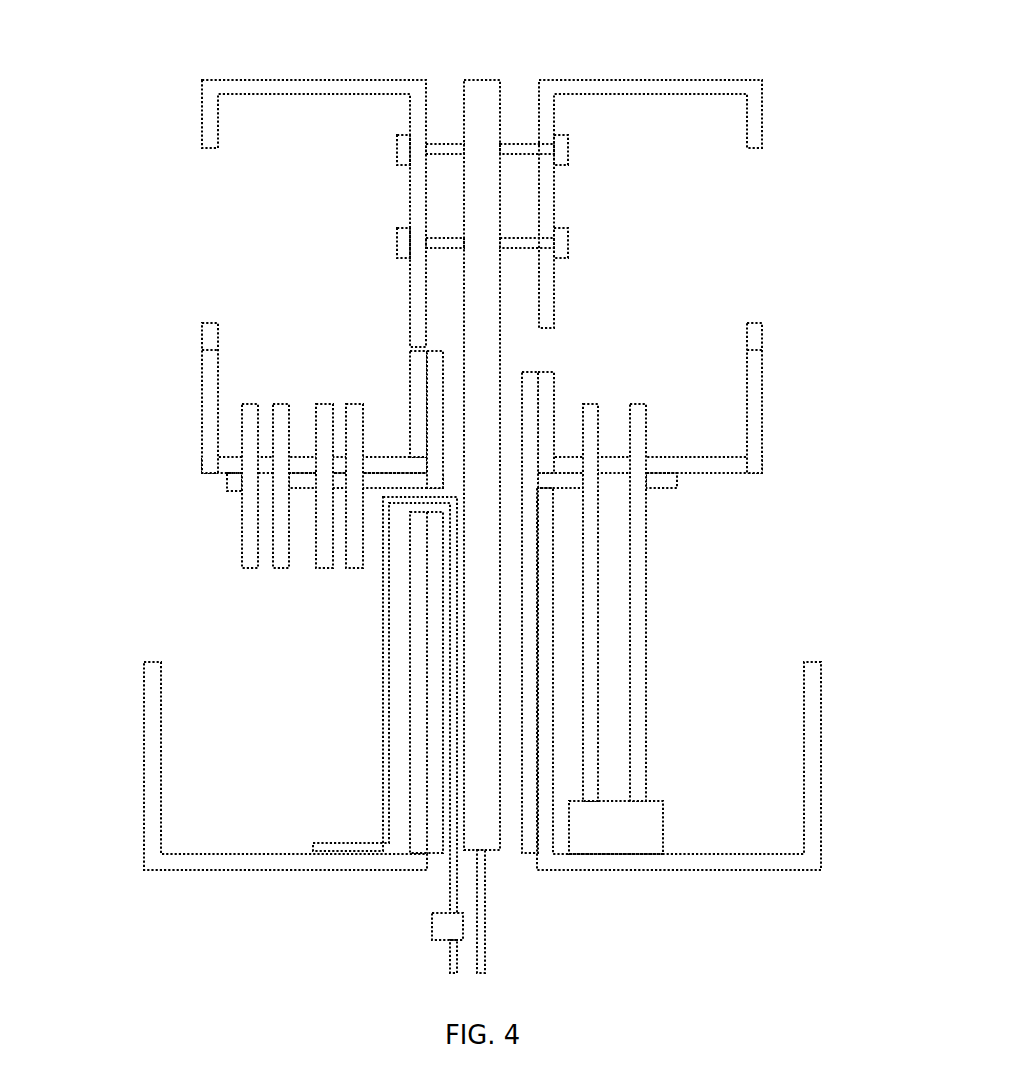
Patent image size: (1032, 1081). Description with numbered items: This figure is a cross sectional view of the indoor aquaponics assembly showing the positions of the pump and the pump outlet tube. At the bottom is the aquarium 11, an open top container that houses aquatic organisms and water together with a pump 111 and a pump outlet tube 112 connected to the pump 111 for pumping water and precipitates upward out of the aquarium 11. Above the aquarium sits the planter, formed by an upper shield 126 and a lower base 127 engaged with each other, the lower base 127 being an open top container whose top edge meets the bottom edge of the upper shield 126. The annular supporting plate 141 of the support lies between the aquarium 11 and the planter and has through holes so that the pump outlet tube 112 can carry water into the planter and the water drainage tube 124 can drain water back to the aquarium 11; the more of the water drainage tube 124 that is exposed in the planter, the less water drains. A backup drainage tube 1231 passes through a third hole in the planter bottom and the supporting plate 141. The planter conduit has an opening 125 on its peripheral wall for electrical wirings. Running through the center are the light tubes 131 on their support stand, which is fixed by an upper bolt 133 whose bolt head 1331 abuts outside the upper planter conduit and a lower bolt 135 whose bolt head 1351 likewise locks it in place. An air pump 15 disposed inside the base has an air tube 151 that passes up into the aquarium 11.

The aquarium 11 is at (812, 728).
The pump 111 is at (623, 825).
The pump outlet tube 112 is at (640, 588).
The opening 125 is at (553, 350).
The upper shield 126 is at (756, 137).
The lower base 127 is at (750, 385).
The light tube 131 is at (483, 95).
The upper bolt 133 is at (520, 147).
The bolt head 1331 is at (561, 151).
The lower bolt 135 is at (527, 243).
The bolt head 1351 is at (563, 247).
The annular supporting plate 141 is at (665, 483).
The backup drainage tube 1231 is at (248, 518).
The water drainage tube 124 is at (323, 558).
The air tube 151 is at (383, 738).
The air pump 15 is at (432, 926).